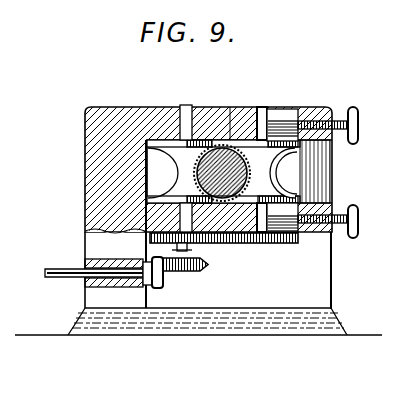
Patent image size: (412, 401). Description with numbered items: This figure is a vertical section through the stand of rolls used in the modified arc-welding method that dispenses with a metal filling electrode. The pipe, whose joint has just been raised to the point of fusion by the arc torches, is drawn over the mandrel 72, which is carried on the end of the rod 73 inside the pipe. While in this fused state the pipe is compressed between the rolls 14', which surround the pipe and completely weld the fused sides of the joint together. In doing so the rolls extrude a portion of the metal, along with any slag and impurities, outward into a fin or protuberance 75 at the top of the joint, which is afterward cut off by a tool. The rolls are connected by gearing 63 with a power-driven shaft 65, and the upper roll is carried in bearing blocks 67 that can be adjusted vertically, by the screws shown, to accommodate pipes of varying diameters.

The mandrel 72 is at (212, 167).
The rod 73 is at (249, 170).
The rolls 14' is at (206, 171).
The fin or protuberance 75 is at (231, 109).
The bearing blocks 67 is at (285, 118).
The power-driven shaft 65 is at (59, 272).
The gearing 63 is at (238, 244).